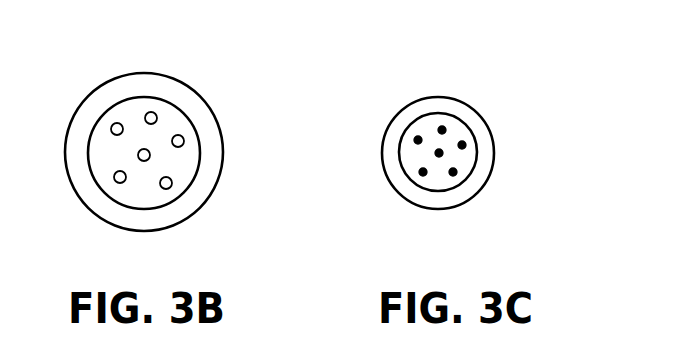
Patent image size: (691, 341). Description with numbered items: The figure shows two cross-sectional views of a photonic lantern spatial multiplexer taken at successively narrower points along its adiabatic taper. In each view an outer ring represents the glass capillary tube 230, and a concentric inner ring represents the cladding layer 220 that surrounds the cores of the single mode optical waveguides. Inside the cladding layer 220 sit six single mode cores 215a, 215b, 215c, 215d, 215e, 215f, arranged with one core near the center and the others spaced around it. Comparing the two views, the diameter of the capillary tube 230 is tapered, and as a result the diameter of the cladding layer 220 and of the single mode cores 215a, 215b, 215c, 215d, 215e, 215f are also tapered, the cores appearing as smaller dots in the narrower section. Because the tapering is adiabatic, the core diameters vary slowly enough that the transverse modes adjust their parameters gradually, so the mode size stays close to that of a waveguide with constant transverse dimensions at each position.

In FIG. 3B, the capillary tube 230 is at (135, 73).
In FIG. 3C, the capillary tube 230 is at (420, 98).
In FIG. 3B, the cladding layer 220 is at (157, 98).
In FIG. 3C, the cladding layer 220 is at (432, 113).
In FIG. 3B, the single mode core 215a is at (152, 112).
In FIG. 3C, the single mode core 215a is at (442, 130).
In FIG. 3B, the single mode core 215b is at (111, 128).
In FIG. 3C, the single mode core 215b is at (418, 140).
In FIG. 3B, the single mode core 215c is at (148, 157).
In FIG. 3C, the single mode core 215c is at (439, 153).
In FIG. 3B, the single mode core 215d is at (114, 178).
In FIG. 3C, the single mode core 215d is at (423, 172).
In FIG. 3B, the single mode core 215e is at (166, 189).
In FIG. 3C, the single mode core 215e is at (453, 172).
In FIG. 3B, the single mode core 215f is at (184, 140).
In FIG. 3C, the single mode core 215f is at (462, 145).